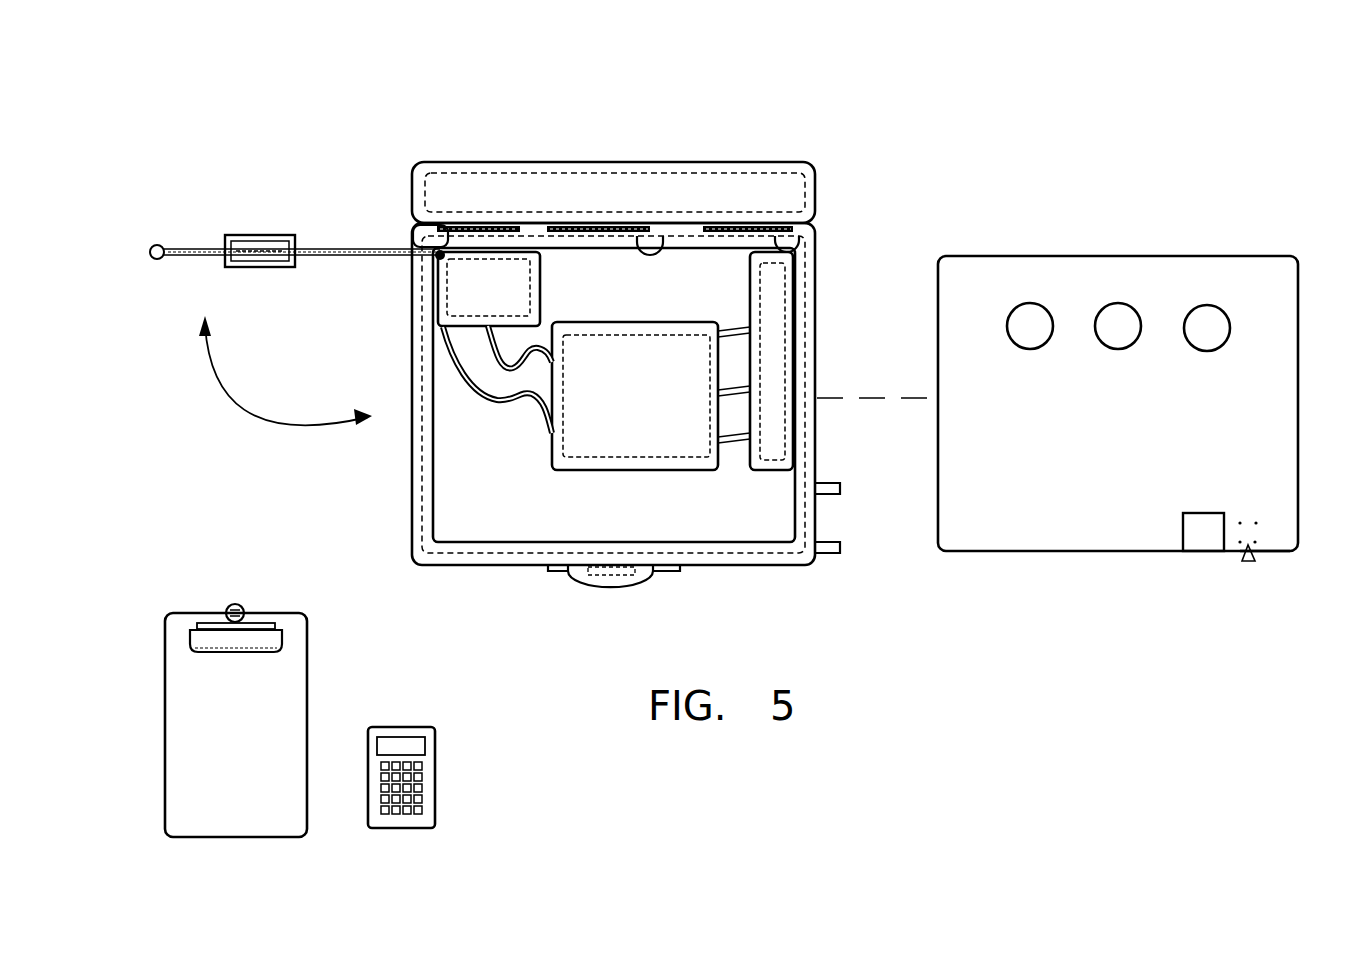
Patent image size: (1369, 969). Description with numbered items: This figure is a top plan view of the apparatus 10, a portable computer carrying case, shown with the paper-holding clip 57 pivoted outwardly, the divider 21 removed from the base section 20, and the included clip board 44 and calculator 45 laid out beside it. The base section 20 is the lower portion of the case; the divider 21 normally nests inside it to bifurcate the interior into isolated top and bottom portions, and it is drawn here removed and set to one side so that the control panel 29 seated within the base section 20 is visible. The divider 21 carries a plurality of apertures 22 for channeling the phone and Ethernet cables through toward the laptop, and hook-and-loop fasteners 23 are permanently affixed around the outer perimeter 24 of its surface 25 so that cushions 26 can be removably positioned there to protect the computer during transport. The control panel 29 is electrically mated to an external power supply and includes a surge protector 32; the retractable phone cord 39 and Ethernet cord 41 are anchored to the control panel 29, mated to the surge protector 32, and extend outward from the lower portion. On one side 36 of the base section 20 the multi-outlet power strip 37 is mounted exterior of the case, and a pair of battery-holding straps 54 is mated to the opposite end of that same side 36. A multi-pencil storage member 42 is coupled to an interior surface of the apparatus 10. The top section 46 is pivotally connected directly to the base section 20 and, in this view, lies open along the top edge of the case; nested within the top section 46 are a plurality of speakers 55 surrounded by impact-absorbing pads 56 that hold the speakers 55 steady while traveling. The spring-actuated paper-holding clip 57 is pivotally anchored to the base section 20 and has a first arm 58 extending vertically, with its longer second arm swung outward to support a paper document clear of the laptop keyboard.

The apparatus 10 is at (992, 150).
The base section 20 is at (748, 568).
The divider 21 is at (1093, 527).
The apertures 22 is at (1200, 317).
The hook-and-loop fasteners 23 is at (1250, 562).
The outer perimeter 24 is at (1275, 552).
The surface 25 is at (1010, 505).
The cushions 26 is at (1203, 542).
The control panel 29 is at (442, 298).
The surge protector 32 is at (553, 465).
The one side 36 is at (817, 353).
The multi-outlet power strip 37 is at (787, 268).
The retractable phone cord 39 is at (502, 370).
The Ethernet cord 41 is at (497, 395).
The multi-pencil storage member 42 is at (662, 248).
The clip board 44 is at (253, 837).
The calculator 45 is at (432, 828).
The top section 46 is at (817, 188).
The battery-holding straps 54 is at (840, 490).
The speakers 55 is at (420, 236).
The impact-absorbing pads 56 is at (522, 228).
The paper-holding clip 57 is at (237, 235).
The first arm 58 is at (308, 248).